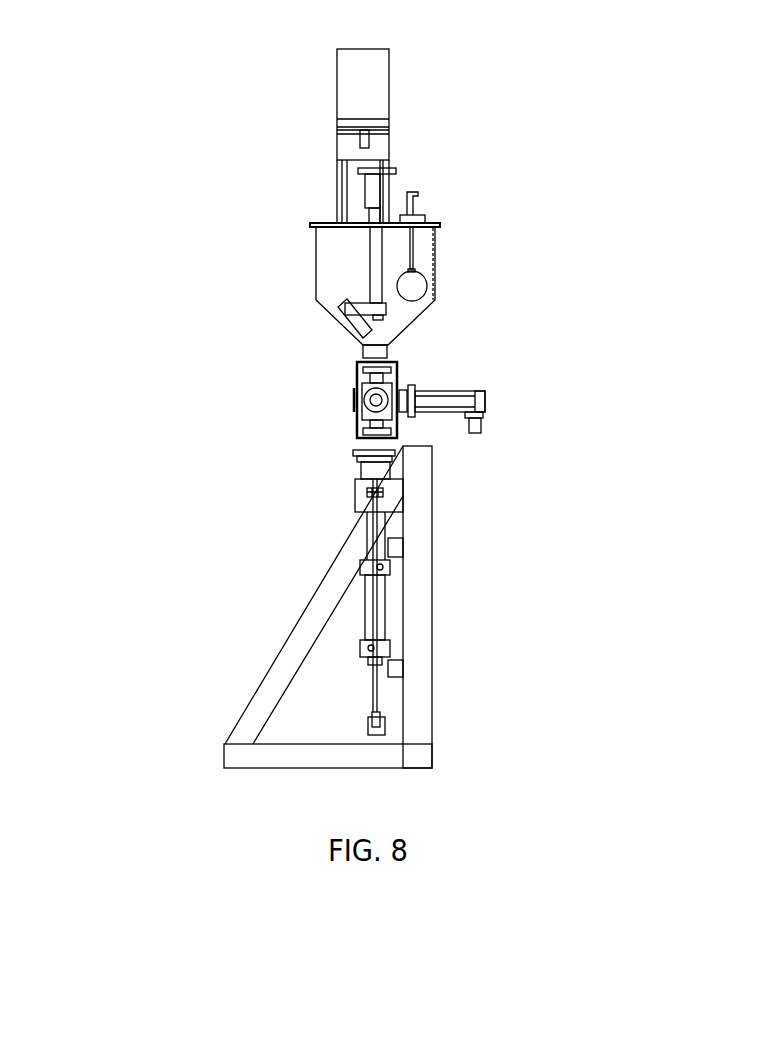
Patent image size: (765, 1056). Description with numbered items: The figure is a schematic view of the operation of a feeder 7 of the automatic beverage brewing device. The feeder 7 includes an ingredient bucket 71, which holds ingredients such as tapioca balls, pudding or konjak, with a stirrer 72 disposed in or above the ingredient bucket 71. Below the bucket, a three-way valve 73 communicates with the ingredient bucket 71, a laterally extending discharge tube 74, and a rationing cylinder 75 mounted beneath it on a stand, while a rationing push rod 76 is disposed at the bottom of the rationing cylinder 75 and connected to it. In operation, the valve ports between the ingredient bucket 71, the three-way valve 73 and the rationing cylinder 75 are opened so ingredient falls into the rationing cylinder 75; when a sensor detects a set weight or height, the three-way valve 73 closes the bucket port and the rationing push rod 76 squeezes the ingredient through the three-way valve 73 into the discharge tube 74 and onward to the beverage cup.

The feeder 7 is at (552, 105).
The ingredient bucket 71 is at (437, 277).
The stirrer 72 is at (373, 262).
The three-way valve 73 is at (357, 408).
The discharge tube 74 is at (462, 402).
The rationing cylinder 75 is at (377, 472).
The rationing push rod 76 is at (373, 590).